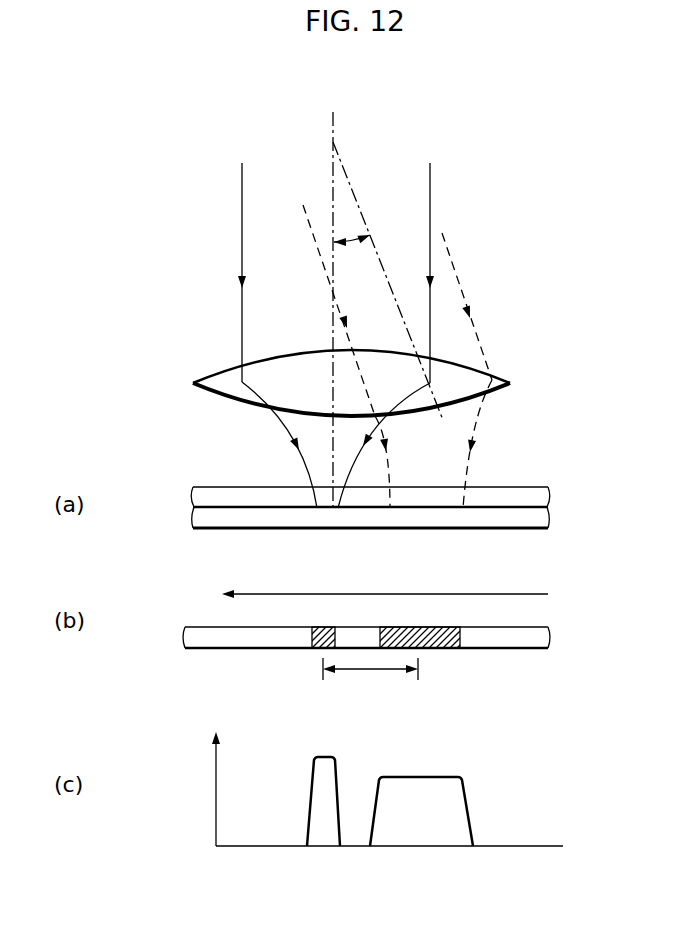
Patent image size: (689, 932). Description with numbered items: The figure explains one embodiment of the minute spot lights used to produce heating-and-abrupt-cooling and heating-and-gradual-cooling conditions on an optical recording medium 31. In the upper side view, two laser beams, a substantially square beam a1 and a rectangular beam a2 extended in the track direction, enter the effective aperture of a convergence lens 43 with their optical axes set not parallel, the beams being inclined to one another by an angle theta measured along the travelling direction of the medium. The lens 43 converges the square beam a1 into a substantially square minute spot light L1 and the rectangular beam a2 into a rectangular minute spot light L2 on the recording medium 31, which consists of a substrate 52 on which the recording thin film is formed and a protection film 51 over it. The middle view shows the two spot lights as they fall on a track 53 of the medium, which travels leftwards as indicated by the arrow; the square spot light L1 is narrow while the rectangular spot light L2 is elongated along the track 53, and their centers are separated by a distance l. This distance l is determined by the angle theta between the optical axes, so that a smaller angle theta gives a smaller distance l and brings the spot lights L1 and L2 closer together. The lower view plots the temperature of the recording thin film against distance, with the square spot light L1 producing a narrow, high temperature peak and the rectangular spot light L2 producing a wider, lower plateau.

The optical recording medium 31 is at (367, 512).
The convergence lens 43 is at (512, 385).
The protection film 51 is at (540, 487).
The substrate 52 is at (530, 528).
The track 53 is at (216, 644).
The laser beam of substantially square shape a1 is at (240, 258).
The laser beam of rectangular shape a2 is at (457, 273).
The substantially square minute spot light L1 is at (305, 465).
The rectangular minute spot light L2 is at (470, 432).
The angle formed by the optical axes theta is at (352, 252).
The distance between spot light centers l is at (370, 680).